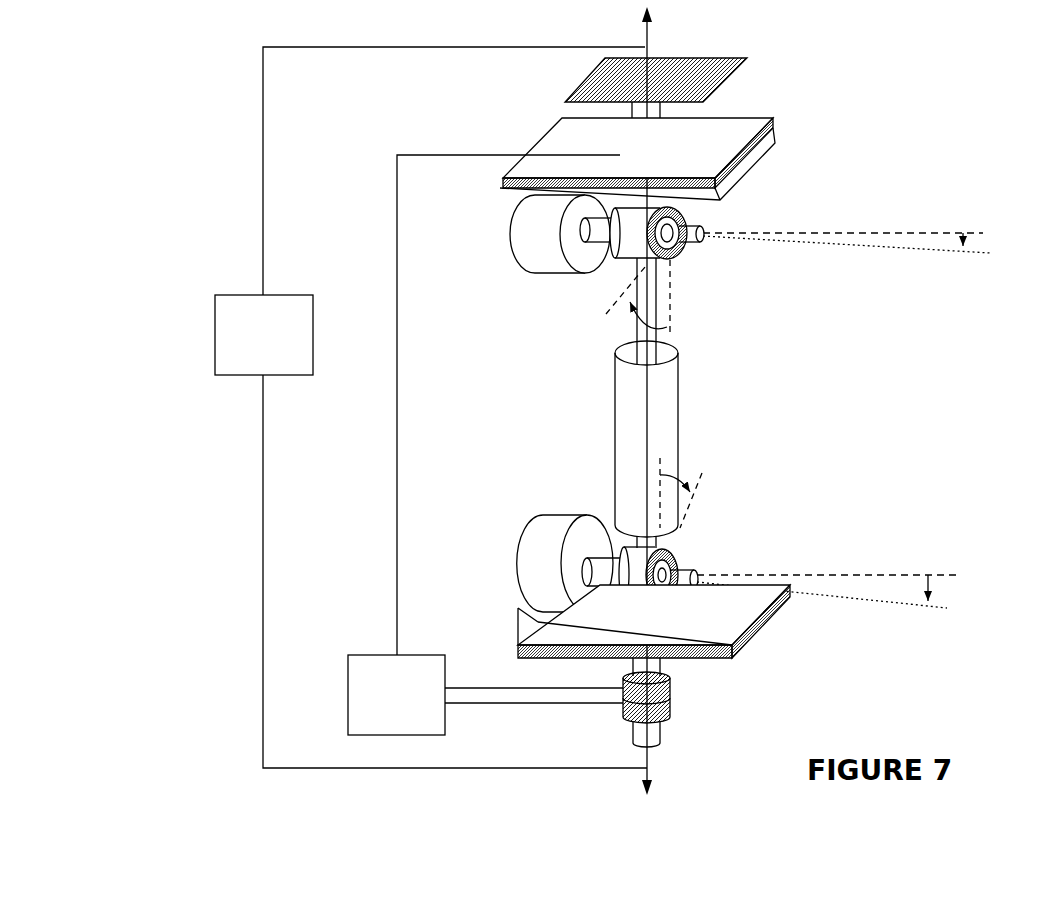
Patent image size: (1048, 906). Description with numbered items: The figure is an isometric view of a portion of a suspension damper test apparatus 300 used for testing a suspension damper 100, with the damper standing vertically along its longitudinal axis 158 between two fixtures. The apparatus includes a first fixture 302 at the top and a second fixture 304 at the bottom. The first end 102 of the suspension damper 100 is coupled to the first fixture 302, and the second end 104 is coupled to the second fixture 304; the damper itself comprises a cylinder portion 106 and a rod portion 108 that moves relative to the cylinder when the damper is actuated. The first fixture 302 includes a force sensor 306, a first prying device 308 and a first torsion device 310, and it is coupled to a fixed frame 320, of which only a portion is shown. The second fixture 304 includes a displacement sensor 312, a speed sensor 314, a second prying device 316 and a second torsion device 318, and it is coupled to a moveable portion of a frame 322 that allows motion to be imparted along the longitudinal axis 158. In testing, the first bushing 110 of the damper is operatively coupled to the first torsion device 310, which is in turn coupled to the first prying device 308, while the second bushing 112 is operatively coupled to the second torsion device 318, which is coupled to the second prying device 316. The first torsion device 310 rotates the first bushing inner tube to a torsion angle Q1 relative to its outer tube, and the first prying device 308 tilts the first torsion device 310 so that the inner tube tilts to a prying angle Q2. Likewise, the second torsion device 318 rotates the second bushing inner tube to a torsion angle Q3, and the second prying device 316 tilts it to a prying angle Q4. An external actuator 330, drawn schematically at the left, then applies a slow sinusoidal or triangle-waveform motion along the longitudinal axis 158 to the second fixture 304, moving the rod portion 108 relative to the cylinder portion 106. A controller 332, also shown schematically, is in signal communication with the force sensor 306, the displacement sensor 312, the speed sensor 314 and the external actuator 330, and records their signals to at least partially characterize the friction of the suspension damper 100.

The suspension damper 100 is at (720, 404).
The first end 102 is at (634, 262).
The second end 104 is at (618, 538).
The cylinder portion 106 is at (615, 380).
The rod portion 108 is at (634, 270).
The first bushing 110 is at (708, 277).
The second bushing 112 is at (728, 546).
The longitudinal axis 158 is at (655, 754).
The suspension damper test apparatus 300 is at (224, 167).
The first fixture 302 is at (845, 183).
The second fixture 304 is at (845, 689).
The force sensor 306 is at (673, 152).
The first prying device 308 is at (756, 117).
The first torsion device 310 is at (512, 232).
The displacement sensor 312 is at (672, 710).
The speed sensor 314 is at (672, 689).
The second prying device 316 is at (757, 630).
The second torsion device 318 is at (557, 515).
The fixed frame 320 is at (718, 57).
The moveable portion of a frame 322 is at (632, 740).
The external actuator 330 is at (240, 350).
The controller 332 is at (373, 710).
The torsion angle Q1 is at (630, 305).
The prying angle Q2 is at (864, 247).
The torsion angle Q3 is at (689, 485).
The prying angle Q4 is at (845, 593).